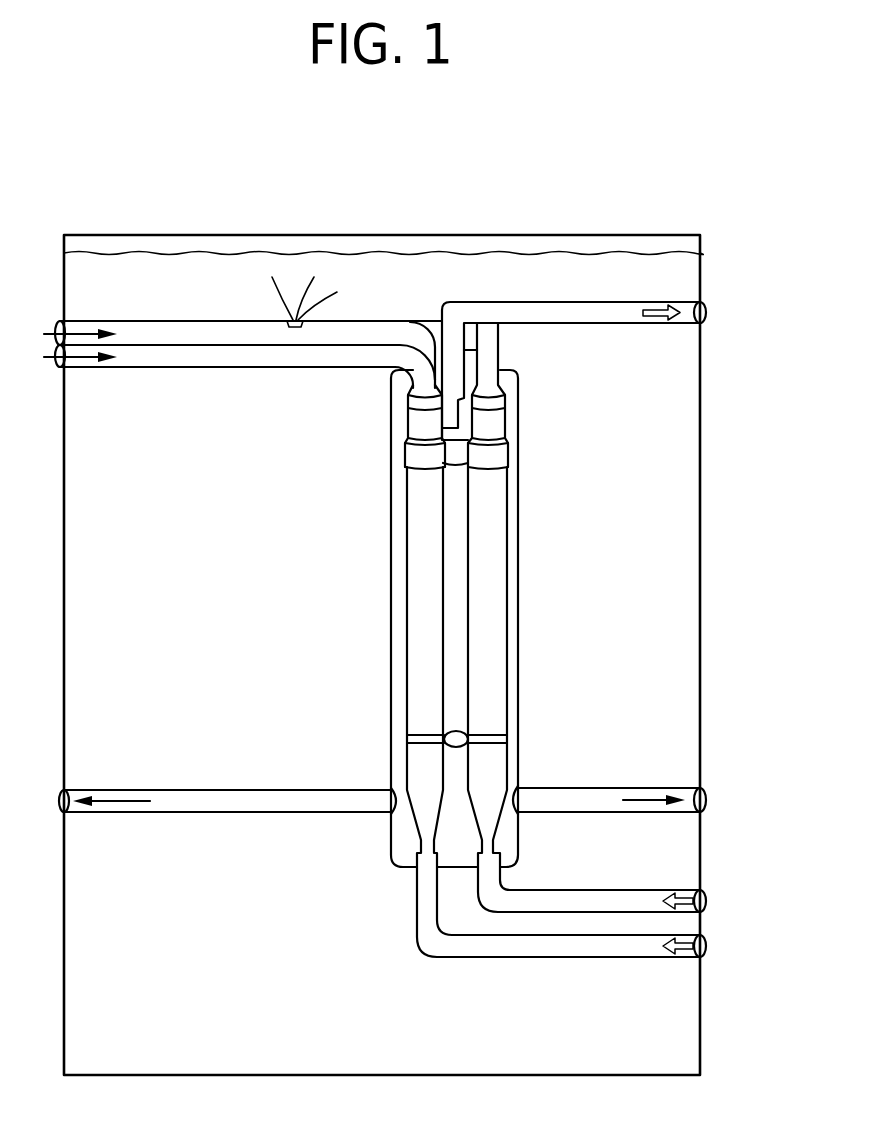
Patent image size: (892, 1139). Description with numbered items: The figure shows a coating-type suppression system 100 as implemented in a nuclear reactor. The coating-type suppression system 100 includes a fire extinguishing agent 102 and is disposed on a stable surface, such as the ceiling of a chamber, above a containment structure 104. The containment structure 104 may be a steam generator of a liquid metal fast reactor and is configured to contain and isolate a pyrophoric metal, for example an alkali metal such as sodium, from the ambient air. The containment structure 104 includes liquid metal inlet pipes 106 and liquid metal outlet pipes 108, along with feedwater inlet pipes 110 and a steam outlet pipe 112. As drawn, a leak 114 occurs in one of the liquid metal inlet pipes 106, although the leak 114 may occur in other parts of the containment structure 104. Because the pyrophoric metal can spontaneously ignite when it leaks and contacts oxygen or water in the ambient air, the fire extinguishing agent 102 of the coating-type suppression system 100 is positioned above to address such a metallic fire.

The coating-type suppression system 100 is at (693, 206).
The fire extinguishing agent 102 is at (690, 243).
The containment structure 104 is at (545, 598).
The liquid metal inlet pipes 106 is at (190, 337).
The liquid metal outlet pipes 108 is at (170, 800).
The feedwater inlet pipes 110 is at (552, 900).
The steam outlet pipe 112 is at (593, 312).
The leak 114 is at (260, 293).